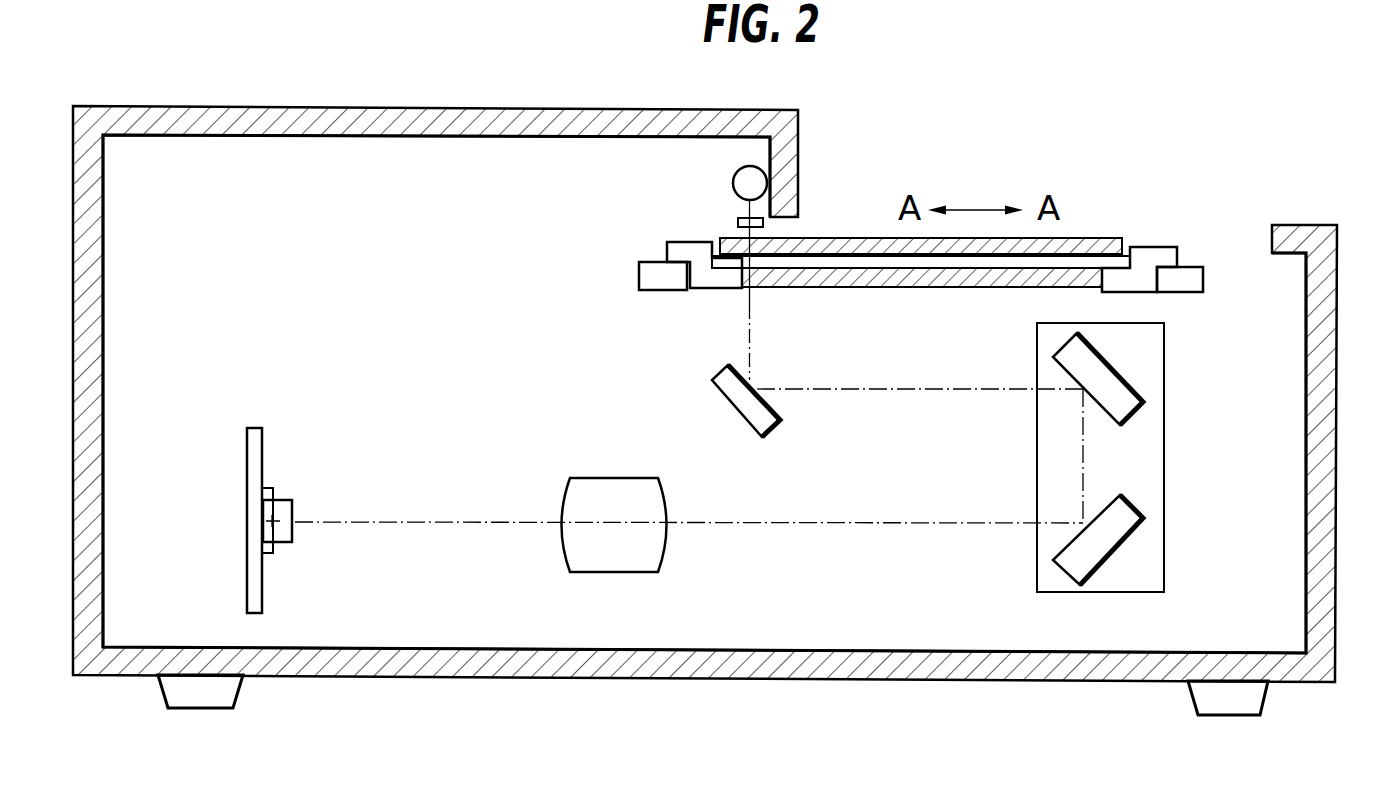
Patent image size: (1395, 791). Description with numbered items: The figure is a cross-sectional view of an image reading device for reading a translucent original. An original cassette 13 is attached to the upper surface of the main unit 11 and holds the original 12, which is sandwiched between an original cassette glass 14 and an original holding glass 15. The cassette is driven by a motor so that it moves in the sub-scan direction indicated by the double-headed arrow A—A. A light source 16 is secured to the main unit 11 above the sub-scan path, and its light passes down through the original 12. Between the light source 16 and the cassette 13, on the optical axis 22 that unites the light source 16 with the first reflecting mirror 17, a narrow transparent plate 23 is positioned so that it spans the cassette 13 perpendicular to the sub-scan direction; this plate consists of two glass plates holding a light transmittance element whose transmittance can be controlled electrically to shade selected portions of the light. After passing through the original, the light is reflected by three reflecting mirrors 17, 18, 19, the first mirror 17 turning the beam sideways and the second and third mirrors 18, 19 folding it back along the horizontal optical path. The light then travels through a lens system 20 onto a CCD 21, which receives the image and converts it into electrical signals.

The main unit 11 is at (1338, 391).
The original 12 is at (831, 237).
The original cassette 13 is at (1133, 233).
The original cassette glass 14 is at (898, 288).
The original holding glass 15 is at (1072, 240).
The light source 16 is at (752, 185).
The reflecting mirror 17 is at (736, 408).
The reflecting mirror 18 is at (1125, 378).
The reflecting mirror 19 is at (1115, 548).
The lens system 20 is at (588, 478).
The CCD 21 is at (292, 500).
The optical axis 22 is at (749, 330).
The narrow transparent plate 23 is at (738, 221).